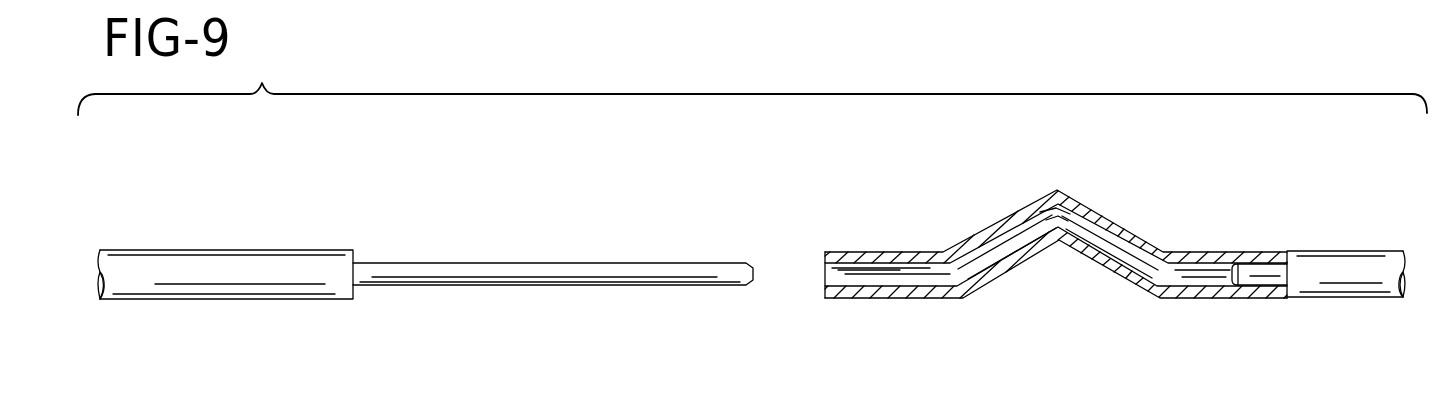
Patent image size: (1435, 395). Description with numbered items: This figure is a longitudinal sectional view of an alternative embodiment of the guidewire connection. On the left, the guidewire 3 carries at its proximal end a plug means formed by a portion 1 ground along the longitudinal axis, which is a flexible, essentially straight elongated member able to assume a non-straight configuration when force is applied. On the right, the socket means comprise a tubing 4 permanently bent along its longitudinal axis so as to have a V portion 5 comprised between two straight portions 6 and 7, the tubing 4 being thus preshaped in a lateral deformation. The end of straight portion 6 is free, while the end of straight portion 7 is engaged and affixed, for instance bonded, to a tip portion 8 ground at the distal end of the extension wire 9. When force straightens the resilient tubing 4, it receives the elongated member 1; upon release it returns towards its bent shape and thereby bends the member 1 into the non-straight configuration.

The portion ground along the longitudinal axis 1 is at (504, 273).
The guidewire 3 is at (245, 271).
The tubing 4 is at (1181, 252).
The V portion 5 is at (1057, 190).
The straight portion 6 is at (895, 251).
The straight portion 7 is at (1224, 252).
The tip portion 8 is at (1270, 273).
The extension wire 9 is at (1355, 272).